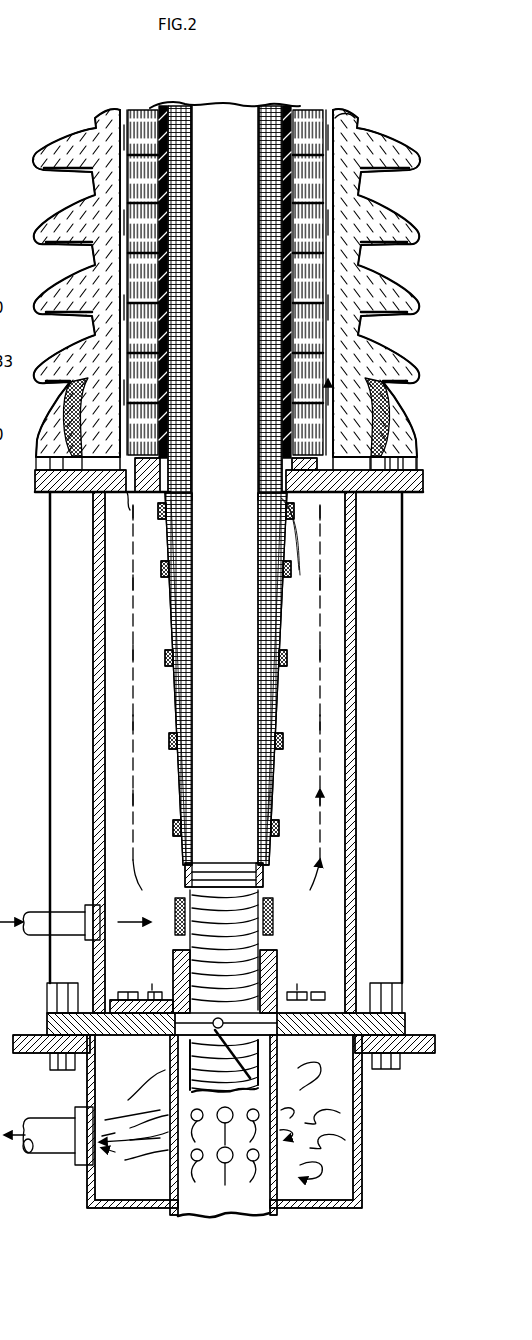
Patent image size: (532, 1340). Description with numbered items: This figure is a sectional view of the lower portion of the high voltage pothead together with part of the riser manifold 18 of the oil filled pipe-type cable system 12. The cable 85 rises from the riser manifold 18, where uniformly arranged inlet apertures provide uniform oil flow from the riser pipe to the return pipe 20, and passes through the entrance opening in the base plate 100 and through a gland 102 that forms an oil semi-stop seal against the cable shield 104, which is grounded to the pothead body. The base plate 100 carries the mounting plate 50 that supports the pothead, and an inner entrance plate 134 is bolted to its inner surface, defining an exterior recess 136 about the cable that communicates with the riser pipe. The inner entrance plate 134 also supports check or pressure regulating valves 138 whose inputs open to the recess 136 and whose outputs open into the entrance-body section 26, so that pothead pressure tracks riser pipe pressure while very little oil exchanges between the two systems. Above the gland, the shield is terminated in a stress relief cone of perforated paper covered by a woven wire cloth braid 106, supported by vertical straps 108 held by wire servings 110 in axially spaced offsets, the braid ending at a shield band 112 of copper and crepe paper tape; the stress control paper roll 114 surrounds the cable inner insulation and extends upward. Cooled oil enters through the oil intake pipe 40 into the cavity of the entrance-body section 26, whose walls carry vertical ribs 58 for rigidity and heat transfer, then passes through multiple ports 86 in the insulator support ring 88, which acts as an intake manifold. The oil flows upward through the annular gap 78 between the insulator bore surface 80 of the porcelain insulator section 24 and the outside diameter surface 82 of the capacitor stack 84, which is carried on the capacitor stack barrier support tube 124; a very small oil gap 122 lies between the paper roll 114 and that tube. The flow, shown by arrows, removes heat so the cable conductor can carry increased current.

The oil filled pipe-type cable system 12 is at (276, 1212).
The riser manifold 18 is at (360, 1136).
The return pipe 20 is at (48, 1153).
The porcelain insulator section 24 is at (395, 278).
The entrance-body section 26 is at (355, 578).
The oil intake pipe 40 is at (34, 912).
The mounting plate 50 is at (420, 1054).
The vertical ribs or vanes 58 is at (392, 518).
The annular space or gap 78 is at (345, 120).
The insulator bore surface 80 is at (326, 180).
The outside diameter surface of the capacitor stack 82 is at (328, 198).
The capacitor stack 84 is at (140, 108).
The cable 85 is at (238, 797).
The ports 86 is at (130, 492).
The insulator support ring 88 is at (422, 470).
The base plate 100 is at (407, 1028).
The gland 102 is at (278, 975).
The cable shield 104 is at (228, 970).
The woven wire cloth braid 106 is at (270, 800).
The vertical straps 108 is at (178, 778).
The wire servings 110 is at (170, 655).
The shield band 112 is at (282, 498).
The stress control paper roll 114 is at (258, 396).
The oil gap 122 is at (282, 112).
The capacitor stack barrier support tube 124 is at (300, 108).
The inner entrance plate 134 is at (128, 1000).
The exterior recess or cavity 136 is at (290, 1030).
The check or pressure regulating valves 138 is at (158, 990).